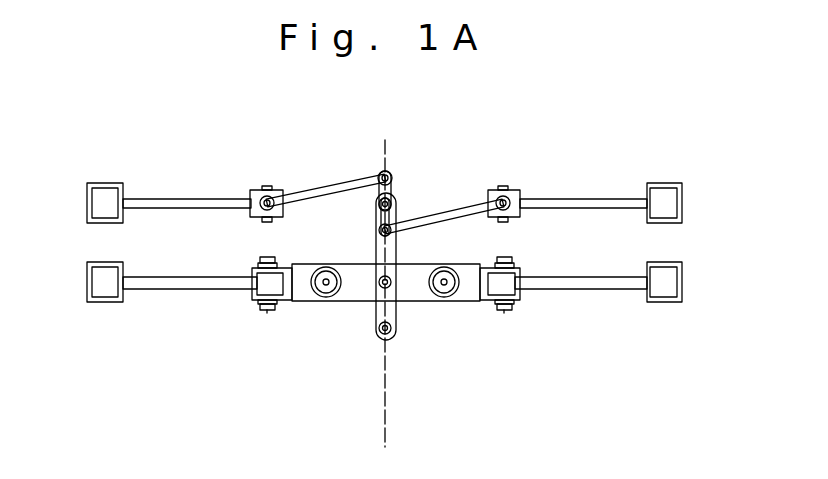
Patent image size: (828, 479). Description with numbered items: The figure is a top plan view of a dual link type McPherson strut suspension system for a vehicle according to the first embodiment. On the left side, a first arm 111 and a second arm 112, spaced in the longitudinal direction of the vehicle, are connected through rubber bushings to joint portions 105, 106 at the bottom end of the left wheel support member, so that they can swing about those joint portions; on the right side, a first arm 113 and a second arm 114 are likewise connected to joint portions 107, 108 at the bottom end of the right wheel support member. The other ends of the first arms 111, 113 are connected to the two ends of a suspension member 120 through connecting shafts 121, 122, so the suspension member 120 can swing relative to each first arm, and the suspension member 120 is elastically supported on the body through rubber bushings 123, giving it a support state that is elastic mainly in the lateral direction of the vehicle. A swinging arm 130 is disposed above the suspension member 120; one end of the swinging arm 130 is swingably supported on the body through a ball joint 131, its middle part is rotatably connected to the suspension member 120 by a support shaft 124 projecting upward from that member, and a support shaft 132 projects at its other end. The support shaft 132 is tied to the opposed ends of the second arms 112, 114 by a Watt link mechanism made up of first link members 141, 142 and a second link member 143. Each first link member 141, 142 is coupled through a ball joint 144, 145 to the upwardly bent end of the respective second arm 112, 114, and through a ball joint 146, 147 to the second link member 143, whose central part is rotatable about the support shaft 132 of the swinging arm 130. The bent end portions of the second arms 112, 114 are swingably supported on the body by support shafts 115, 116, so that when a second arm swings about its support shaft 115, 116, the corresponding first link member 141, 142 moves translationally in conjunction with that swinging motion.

The joint portion 105 is at (110, 304).
The joint portion 106 is at (102, 183).
The joint portion 107 is at (663, 303).
The joint portion 108 is at (662, 183).
The first arm 111 is at (173, 292).
The second arm 112 is at (173, 197).
The first arm 113 is at (583, 291).
The second arm 114 is at (588, 198).
The support shaft 115 is at (241, 185).
The support shaft 116 is at (535, 199).
The suspension member 120 is at (467, 303).
The connecting shaft 121 is at (267, 312).
The connecting shaft 122 is at (507, 312).
The rubber bushing 123 is at (323, 298).
The support shaft 124 is at (375, 313).
The swinging arm 130 is at (377, 258).
The ball joint 131 is at (385, 341).
The support shaft 132 is at (393, 200).
The first link member 141 is at (333, 190).
The first link member 142 is at (468, 205).
The second link member 143 is at (402, 190).
The ball joint 144 is at (255, 218).
The ball joint 145 is at (513, 219).
The ball joint 146 is at (380, 174).
The ball joint 147 is at (392, 233).